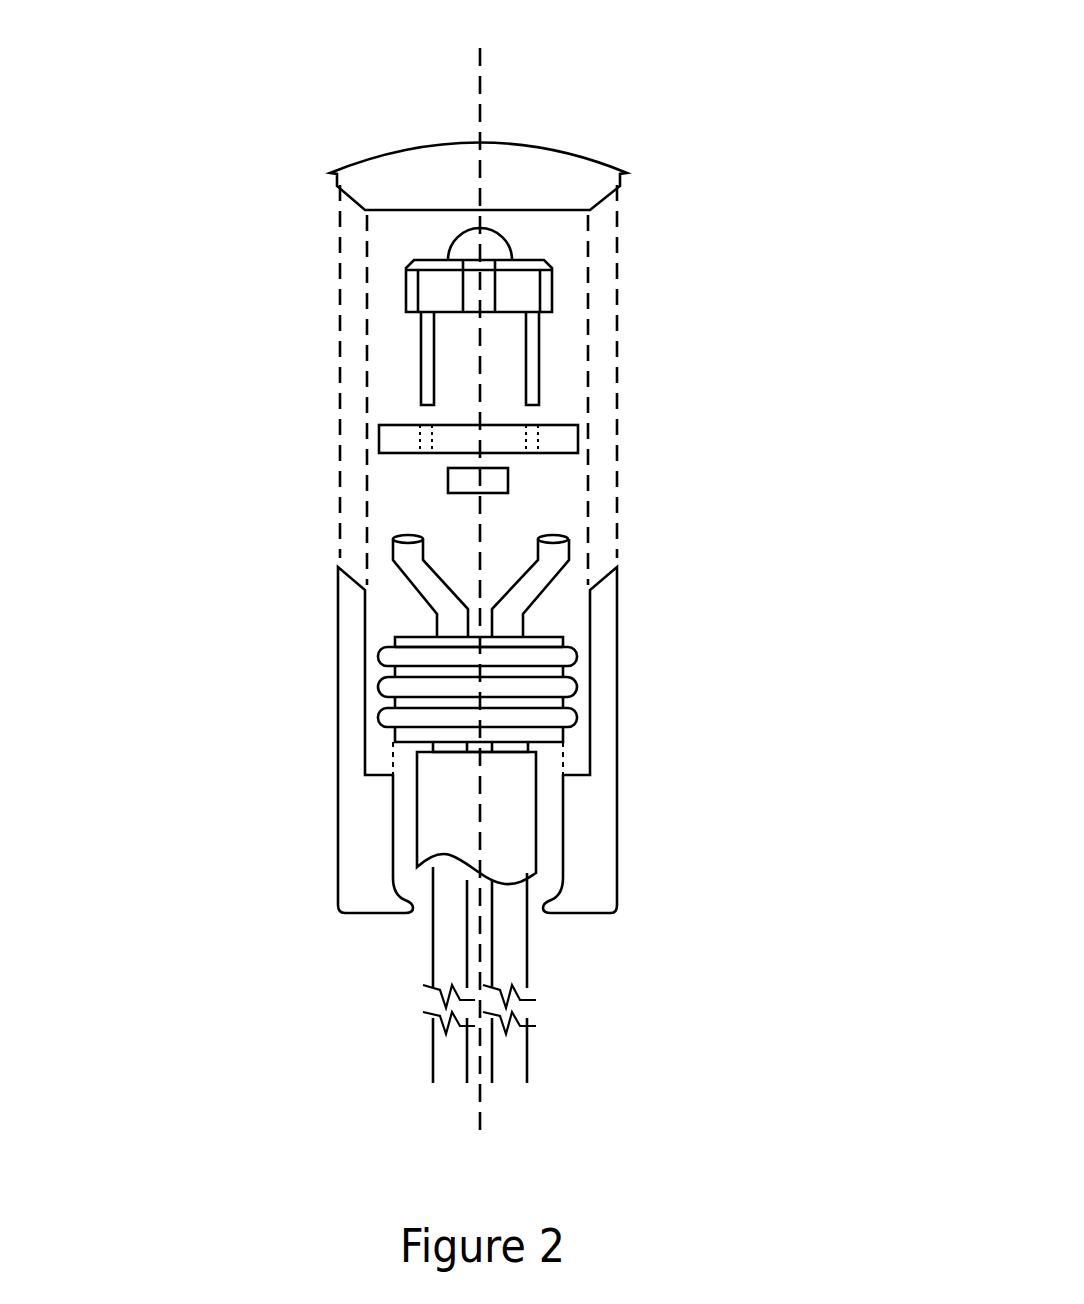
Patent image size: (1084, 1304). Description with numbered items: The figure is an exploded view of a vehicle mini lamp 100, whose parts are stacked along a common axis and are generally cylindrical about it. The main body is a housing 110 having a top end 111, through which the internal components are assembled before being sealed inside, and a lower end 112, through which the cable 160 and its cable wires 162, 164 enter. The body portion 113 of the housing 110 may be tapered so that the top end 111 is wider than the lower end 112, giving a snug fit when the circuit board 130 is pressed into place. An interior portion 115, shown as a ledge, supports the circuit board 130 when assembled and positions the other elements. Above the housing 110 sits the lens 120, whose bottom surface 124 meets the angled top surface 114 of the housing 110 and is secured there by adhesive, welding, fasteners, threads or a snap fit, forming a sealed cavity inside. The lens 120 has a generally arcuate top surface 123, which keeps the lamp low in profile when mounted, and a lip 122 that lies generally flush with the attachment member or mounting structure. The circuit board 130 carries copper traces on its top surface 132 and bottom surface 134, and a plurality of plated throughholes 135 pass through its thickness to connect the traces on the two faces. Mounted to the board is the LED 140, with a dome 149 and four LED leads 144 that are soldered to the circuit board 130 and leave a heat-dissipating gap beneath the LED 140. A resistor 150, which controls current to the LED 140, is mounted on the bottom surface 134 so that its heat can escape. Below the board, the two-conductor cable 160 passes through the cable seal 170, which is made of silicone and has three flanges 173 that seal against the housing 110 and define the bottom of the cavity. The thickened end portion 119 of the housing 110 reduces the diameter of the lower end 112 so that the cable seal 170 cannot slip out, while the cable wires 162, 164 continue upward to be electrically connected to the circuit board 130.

The vehicle mini lamp 100 is at (784, 130).
The housing 110 is at (466, 779).
The top end 111 is at (376, 578).
The lower end 112 is at (421, 920).
The body portion 113 is at (585, 692).
The top surface 114 is at (340, 560).
The interior portion 115 is at (393, 773).
The end portion 119 is at (582, 903).
The lens 120 is at (566, 183).
The lip 122 is at (623, 174).
The top surface 123 is at (403, 144).
The bottom surface 124 is at (600, 206).
The circuit board 130 is at (475, 392).
The top surface 132 is at (390, 424).
The bottom surface 134 is at (392, 443).
The throughholes 135 is at (410, 425).
The LED 140 is at (473, 305).
The LED leads 144 is at (536, 343).
The dome 149 is at (433, 224).
The resistor 150 is at (500, 478).
The cable 160 is at (522, 834).
The cable wire 162 is at (398, 620).
The cable wire 164 is at (558, 560).
The cable seal 170 is at (474, 666).
The flanges 173 is at (385, 689).